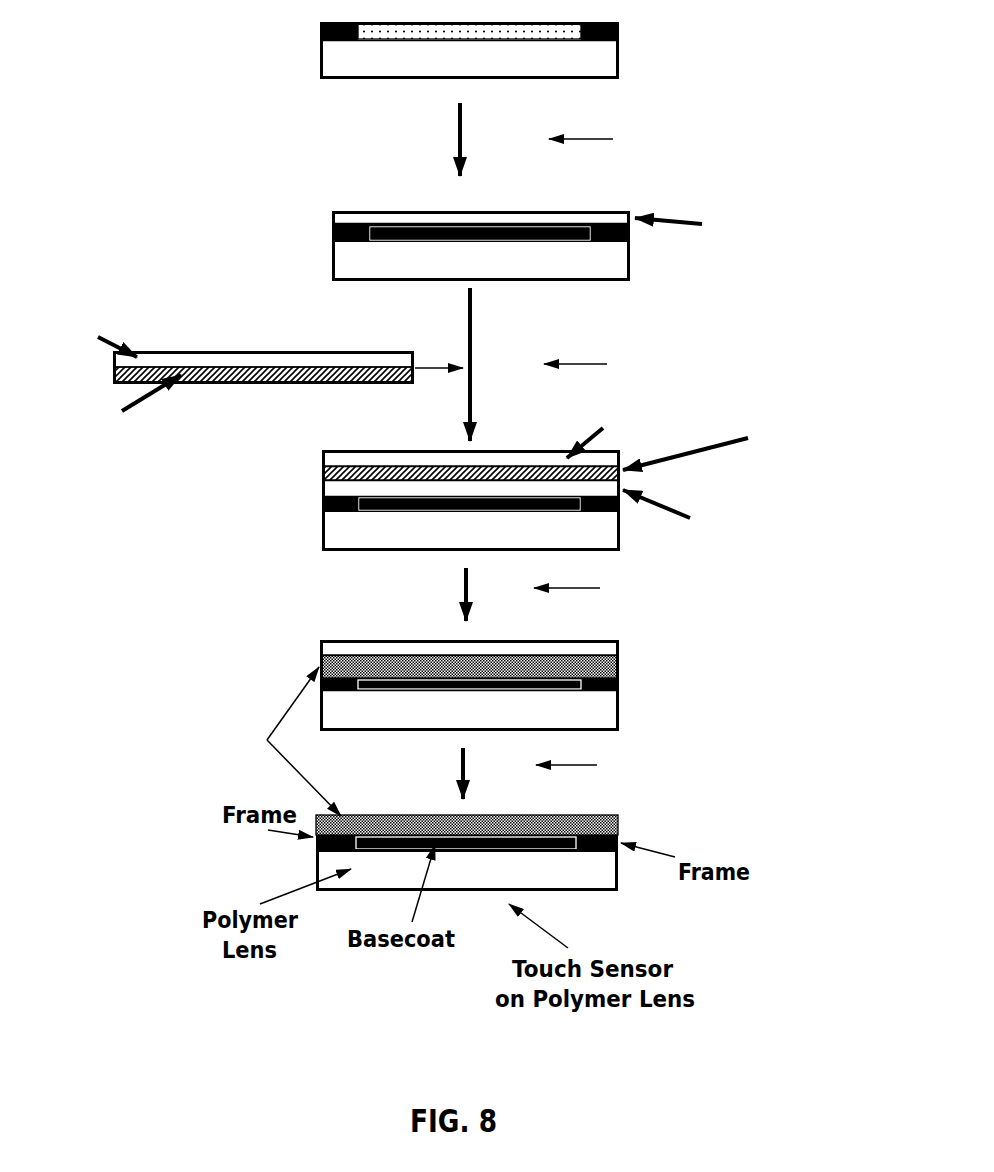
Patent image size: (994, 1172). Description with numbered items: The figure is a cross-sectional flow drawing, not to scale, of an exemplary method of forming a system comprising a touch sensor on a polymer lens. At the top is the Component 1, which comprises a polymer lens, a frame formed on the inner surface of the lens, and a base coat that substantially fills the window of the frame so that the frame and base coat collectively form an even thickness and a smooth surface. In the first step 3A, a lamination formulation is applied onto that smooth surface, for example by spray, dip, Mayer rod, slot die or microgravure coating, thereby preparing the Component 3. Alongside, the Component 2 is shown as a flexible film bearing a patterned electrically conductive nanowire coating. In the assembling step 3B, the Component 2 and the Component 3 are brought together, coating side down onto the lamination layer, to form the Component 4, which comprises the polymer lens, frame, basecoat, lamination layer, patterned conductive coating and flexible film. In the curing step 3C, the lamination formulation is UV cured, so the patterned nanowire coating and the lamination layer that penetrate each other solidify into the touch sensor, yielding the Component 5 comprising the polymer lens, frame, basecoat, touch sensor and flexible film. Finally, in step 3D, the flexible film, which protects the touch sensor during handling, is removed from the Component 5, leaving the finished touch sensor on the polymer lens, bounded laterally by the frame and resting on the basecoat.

The Component 1 is at (290, 53).
The Component 2 is at (299, 340).
The Component 3 is at (316, 232).
The Component 4 is at (301, 512).
The Component 5 is at (639, 681).
The lamination formulation application step 3A is at (639, 139).
The assembly step 3B is at (606, 364).
The UV curing step 3C is at (569, 594).
The flexible film removal step 3D is at (614, 768).